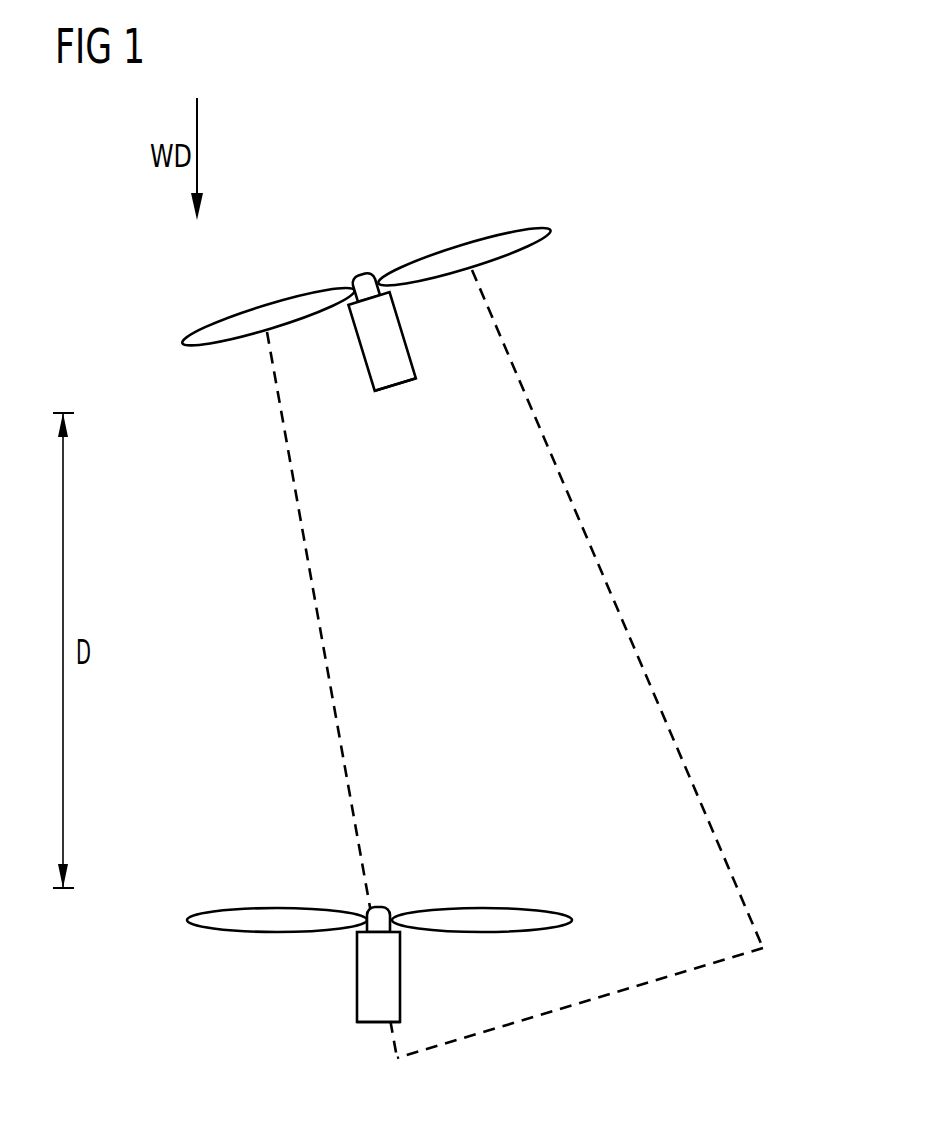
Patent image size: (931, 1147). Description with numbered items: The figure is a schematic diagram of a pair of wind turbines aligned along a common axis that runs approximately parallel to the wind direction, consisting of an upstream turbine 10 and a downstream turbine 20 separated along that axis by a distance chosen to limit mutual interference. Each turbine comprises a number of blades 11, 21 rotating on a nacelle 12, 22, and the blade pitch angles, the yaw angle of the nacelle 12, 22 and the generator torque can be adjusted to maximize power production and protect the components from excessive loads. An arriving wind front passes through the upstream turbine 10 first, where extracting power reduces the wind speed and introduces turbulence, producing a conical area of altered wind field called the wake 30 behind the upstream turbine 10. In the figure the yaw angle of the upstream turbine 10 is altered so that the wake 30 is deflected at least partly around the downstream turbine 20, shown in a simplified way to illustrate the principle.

The upstream turbine 10 is at (358, 350).
The blades 11 is at (265, 303).
The nacelle 12 is at (392, 377).
The downstream turbine 20 is at (357, 975).
The blades 21 is at (277, 907).
The nacelle 22 is at (378, 1012).
The wake 30 is at (658, 580).